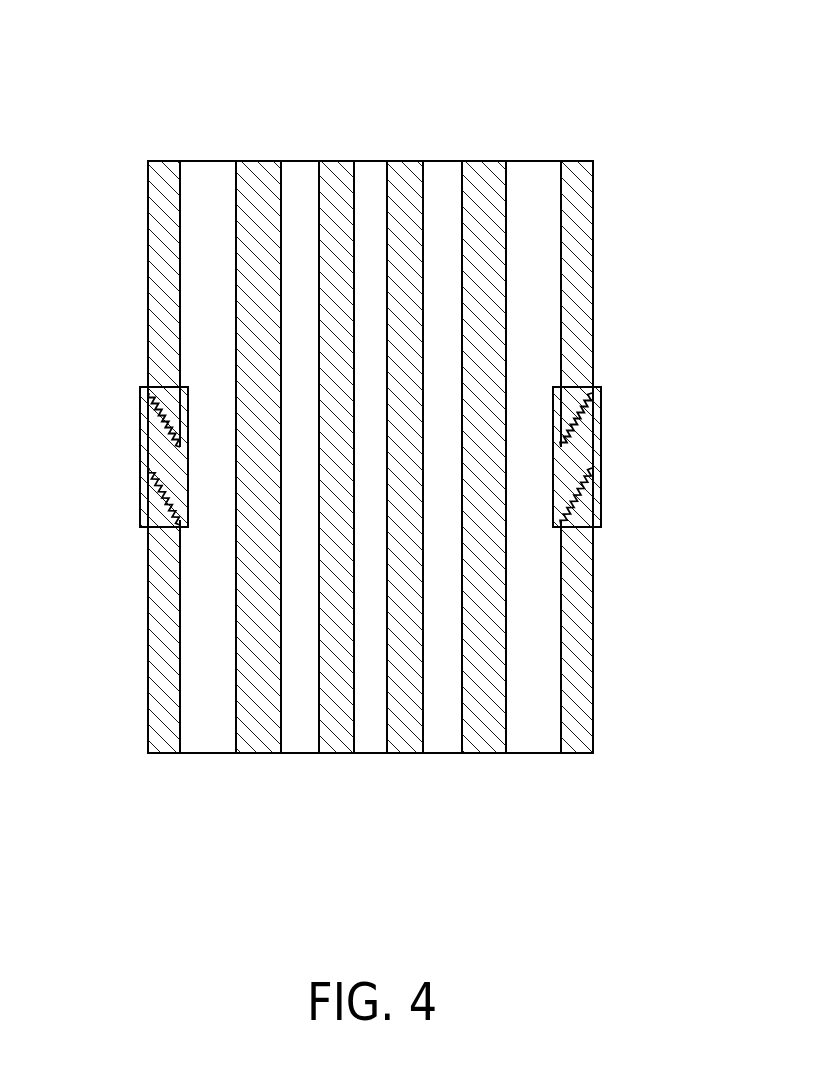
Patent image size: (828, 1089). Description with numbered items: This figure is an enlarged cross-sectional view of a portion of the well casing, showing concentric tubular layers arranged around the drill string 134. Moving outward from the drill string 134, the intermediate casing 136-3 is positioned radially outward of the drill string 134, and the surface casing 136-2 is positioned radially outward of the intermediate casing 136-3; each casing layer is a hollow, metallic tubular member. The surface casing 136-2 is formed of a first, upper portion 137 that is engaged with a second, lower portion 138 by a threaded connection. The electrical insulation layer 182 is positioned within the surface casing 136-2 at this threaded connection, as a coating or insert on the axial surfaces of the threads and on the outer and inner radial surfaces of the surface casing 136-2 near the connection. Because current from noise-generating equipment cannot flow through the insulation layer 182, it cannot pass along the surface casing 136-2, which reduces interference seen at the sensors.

The drill string 134 is at (405, 145).
The surface casing 136-2 is at (370, 403).
The intermediate casing 136-3 is at (257, 145).
The first portion of the surface casing 137 is at (148, 225).
The second portion of the surface casing 138 is at (148, 603).
The electrical insulation layer 182 is at (140, 446).